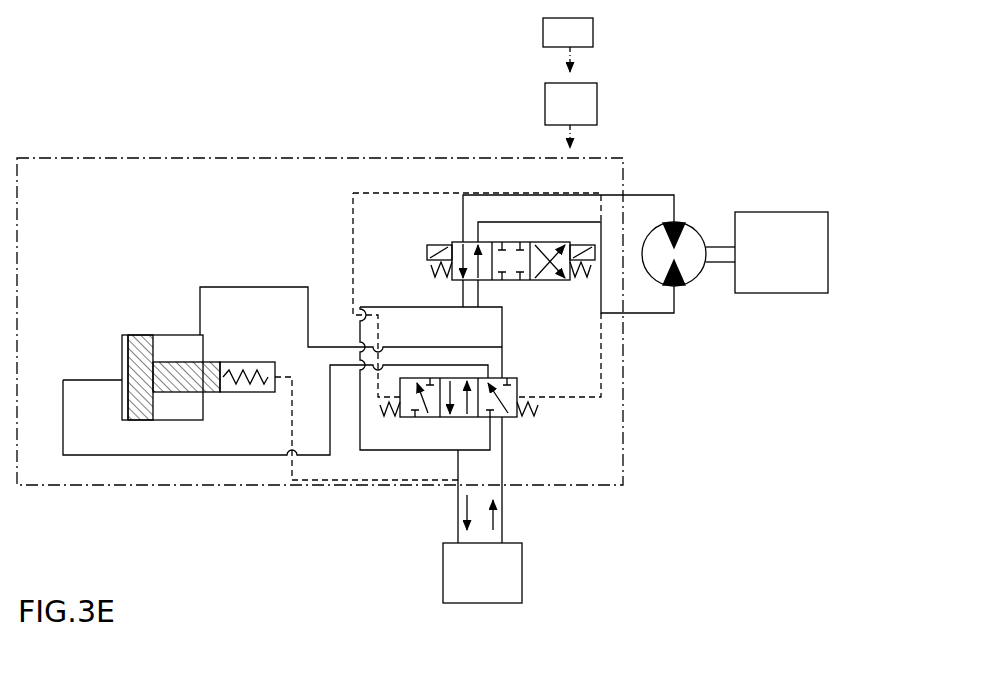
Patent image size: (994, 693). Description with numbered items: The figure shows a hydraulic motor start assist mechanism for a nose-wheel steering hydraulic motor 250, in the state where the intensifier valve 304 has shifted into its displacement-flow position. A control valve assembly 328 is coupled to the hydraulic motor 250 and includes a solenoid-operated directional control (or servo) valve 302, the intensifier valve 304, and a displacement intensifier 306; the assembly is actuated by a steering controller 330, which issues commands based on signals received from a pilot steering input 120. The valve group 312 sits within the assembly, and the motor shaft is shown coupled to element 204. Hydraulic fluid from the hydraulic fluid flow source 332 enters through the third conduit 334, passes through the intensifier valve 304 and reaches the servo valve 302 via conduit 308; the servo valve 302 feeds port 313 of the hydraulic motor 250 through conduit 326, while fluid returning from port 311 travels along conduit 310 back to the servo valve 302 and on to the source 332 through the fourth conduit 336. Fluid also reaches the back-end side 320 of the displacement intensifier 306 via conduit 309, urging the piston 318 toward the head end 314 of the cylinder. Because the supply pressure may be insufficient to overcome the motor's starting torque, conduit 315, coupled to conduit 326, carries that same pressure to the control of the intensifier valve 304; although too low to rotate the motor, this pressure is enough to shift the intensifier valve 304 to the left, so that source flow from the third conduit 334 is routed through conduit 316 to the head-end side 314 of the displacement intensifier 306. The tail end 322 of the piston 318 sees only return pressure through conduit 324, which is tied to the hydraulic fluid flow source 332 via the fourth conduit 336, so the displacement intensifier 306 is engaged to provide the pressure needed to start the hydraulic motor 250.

The pilot steering input 120 is at (582, 42).
The steering controller 330 is at (584, 112).
The control valve assembly 328 is at (140, 152).
The conduit 310 is at (640, 195).
The port 311 is at (676, 222).
The valve assembly 312 is at (353, 200).
The solenoid-operated directional control (or servo) valve 302 is at (557, 290).
The conduit 308 is at (502, 327).
The conduit 315 is at (603, 385).
The conduit 309 is at (263, 287).
The conduit 316 is at (332, 451).
The conduit 324 is at (290, 466).
The displacement intensifier 306 is at (171, 339).
The head end 314 is at (123, 355).
The back-end side 320 is at (158, 355).
The tail end 322 is at (222, 368).
The piston 318 is at (133, 413).
The intensifier valve 304 is at (565, 422).
The hydraulic motor 250 is at (700, 282).
The port 313 is at (675, 287).
The conduit 326 is at (678, 290).
The motor 204 is at (794, 262).
The hydraulic fluid flow source 332 is at (495, 588).
The fourth conduit 336 is at (456, 510).
The third conduit 334 is at (515, 512).